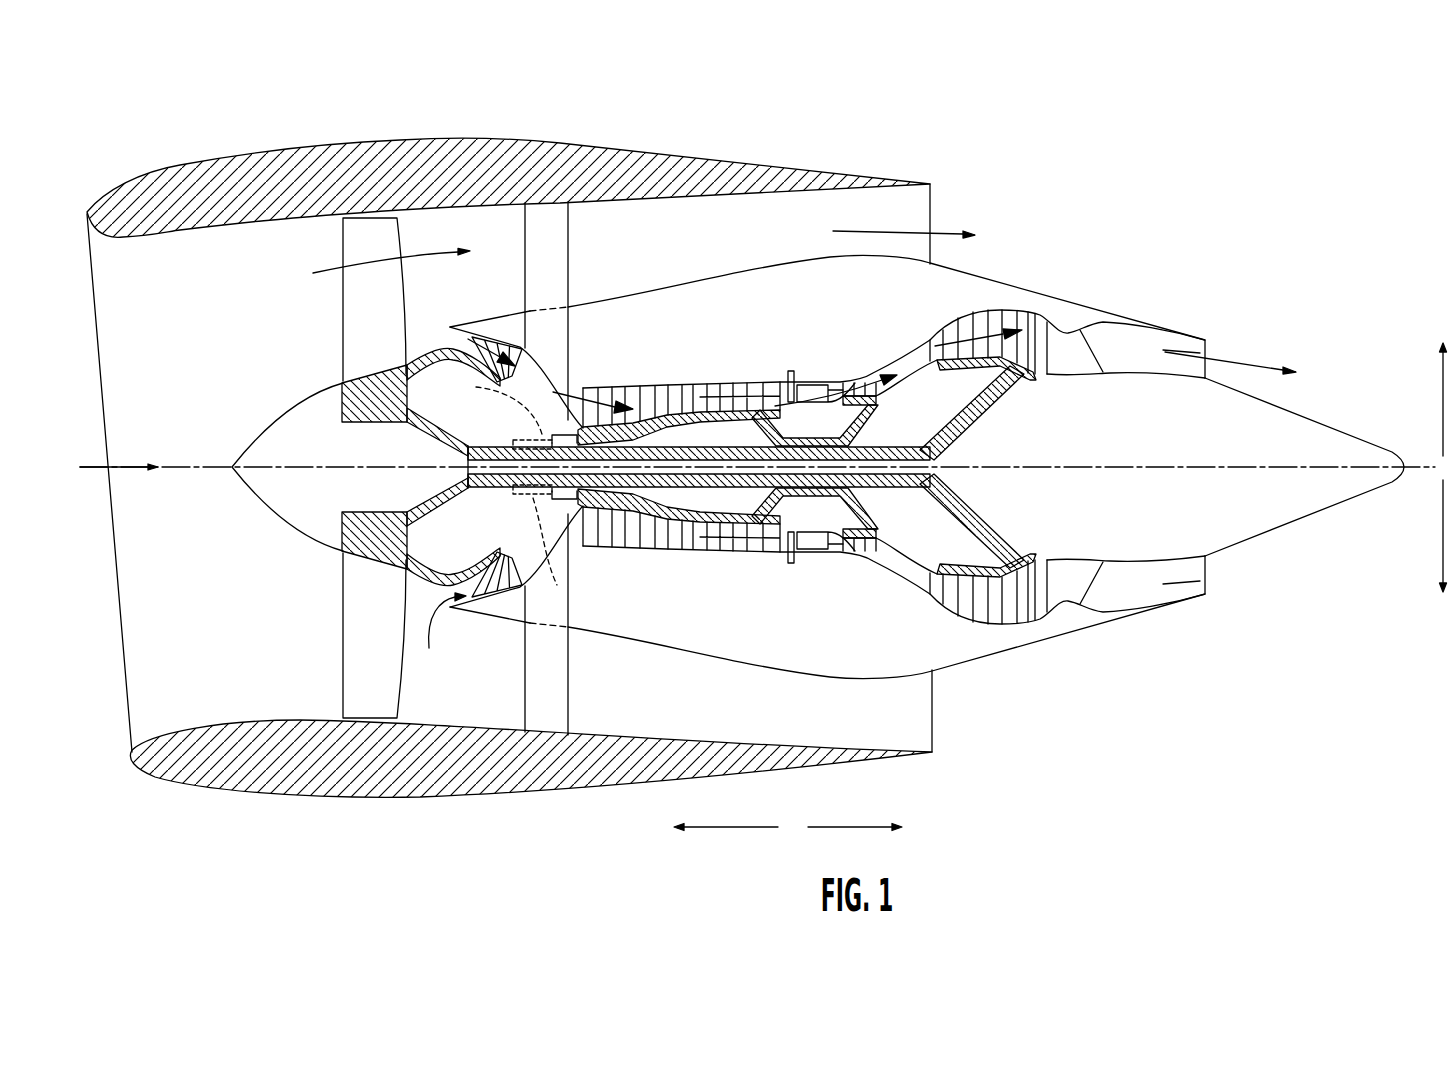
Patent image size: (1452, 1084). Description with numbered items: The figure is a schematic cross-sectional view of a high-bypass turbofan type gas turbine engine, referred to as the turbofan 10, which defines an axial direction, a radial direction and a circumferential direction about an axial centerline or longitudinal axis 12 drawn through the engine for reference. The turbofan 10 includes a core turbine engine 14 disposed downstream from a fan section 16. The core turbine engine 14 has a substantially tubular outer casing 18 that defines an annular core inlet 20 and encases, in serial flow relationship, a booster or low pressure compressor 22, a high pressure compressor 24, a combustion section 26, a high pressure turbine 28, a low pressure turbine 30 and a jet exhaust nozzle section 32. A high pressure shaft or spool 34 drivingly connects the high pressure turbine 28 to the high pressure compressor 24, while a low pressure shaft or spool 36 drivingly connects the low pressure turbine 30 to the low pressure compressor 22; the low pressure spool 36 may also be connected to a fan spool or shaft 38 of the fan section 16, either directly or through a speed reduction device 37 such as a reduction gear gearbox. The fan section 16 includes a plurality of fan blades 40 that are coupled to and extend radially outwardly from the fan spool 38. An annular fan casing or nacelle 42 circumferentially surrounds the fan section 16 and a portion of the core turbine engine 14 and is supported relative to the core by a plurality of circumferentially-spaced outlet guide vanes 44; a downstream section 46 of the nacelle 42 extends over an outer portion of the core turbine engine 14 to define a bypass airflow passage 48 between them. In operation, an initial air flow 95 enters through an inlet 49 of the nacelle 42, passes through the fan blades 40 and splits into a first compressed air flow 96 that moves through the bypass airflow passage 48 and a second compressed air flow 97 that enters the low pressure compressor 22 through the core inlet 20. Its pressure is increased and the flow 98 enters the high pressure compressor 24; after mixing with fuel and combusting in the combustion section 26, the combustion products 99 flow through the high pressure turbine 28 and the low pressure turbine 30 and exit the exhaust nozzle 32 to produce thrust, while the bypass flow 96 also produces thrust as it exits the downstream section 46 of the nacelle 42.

The turbofan 10 is at (1103, 140).
The longitudinal axis 12 is at (1140, 466).
The core turbine engine 14 is at (776, 324).
The fan section 16 is at (508, 174).
The outer casing 18 is at (748, 665).
The core inlet 20 is at (441, 635).
The low pressure compressor 22 is at (522, 560).
The high pressure compressor 24 is at (603, 540).
The combustion section 26 is at (817, 545).
The high pressure turbine 28 is at (880, 548).
The low pressure turbine 30 is at (1033, 620).
The jet exhaust nozzle section 32 is at (1205, 342).
The high pressure spool 34 is at (817, 435).
The low pressure spool 36 is at (531, 440).
The speed reduction device 37 is at (506, 478).
The fan spool 38 is at (408, 430).
The fan blades 40 is at (343, 663).
The nacelle 42 is at (509, 542).
The outlet guide vanes 44 is at (568, 226).
The downstream section 46 is at (810, 158).
The bypass airflow passage 48 is at (701, 235).
The inlet 49 is at (124, 715).
The initial air flow 95 is at (120, 465).
The first compressed air flow 96 is at (363, 262).
The second compressed air flow 97 is at (430, 338).
The compressed air flow into HP compressor 98 is at (593, 395).
The combustion products 99 is at (860, 377).